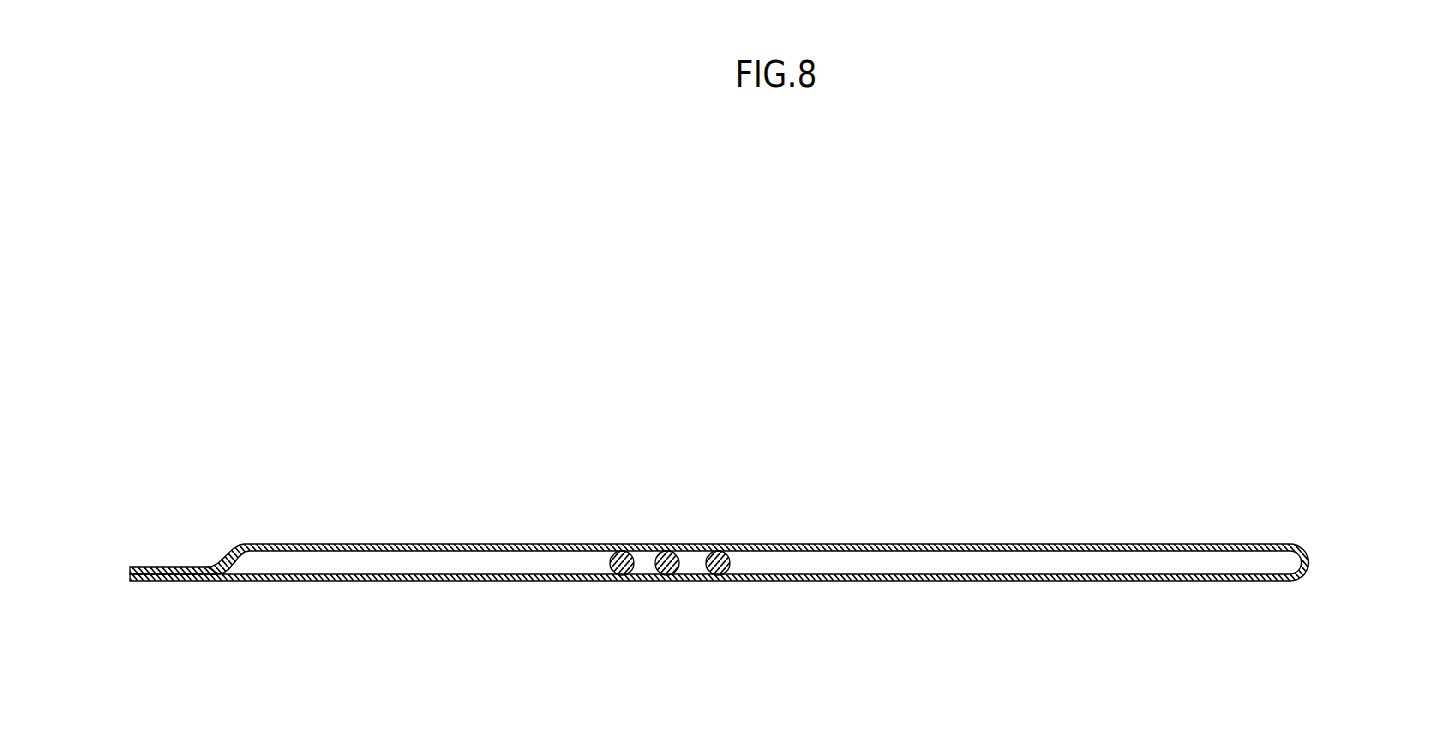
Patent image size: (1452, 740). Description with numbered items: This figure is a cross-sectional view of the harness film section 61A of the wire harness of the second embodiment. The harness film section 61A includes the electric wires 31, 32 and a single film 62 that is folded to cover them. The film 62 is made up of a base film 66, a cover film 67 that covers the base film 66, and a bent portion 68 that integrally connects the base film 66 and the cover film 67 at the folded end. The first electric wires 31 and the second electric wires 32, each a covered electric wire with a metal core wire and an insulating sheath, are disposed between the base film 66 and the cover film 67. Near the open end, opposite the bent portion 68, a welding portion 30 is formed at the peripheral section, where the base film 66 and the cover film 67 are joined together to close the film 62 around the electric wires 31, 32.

The welding portion 30 is at (178, 564).
The first electric wire 31 is at (618, 552).
The second electric wire 32 is at (668, 552).
The harness film section 61A is at (1012, 438).
The film 62 is at (785, 558).
The base film 66 is at (1178, 581).
The cover film 67 is at (1178, 544).
The bent portion 68 is at (1304, 563).